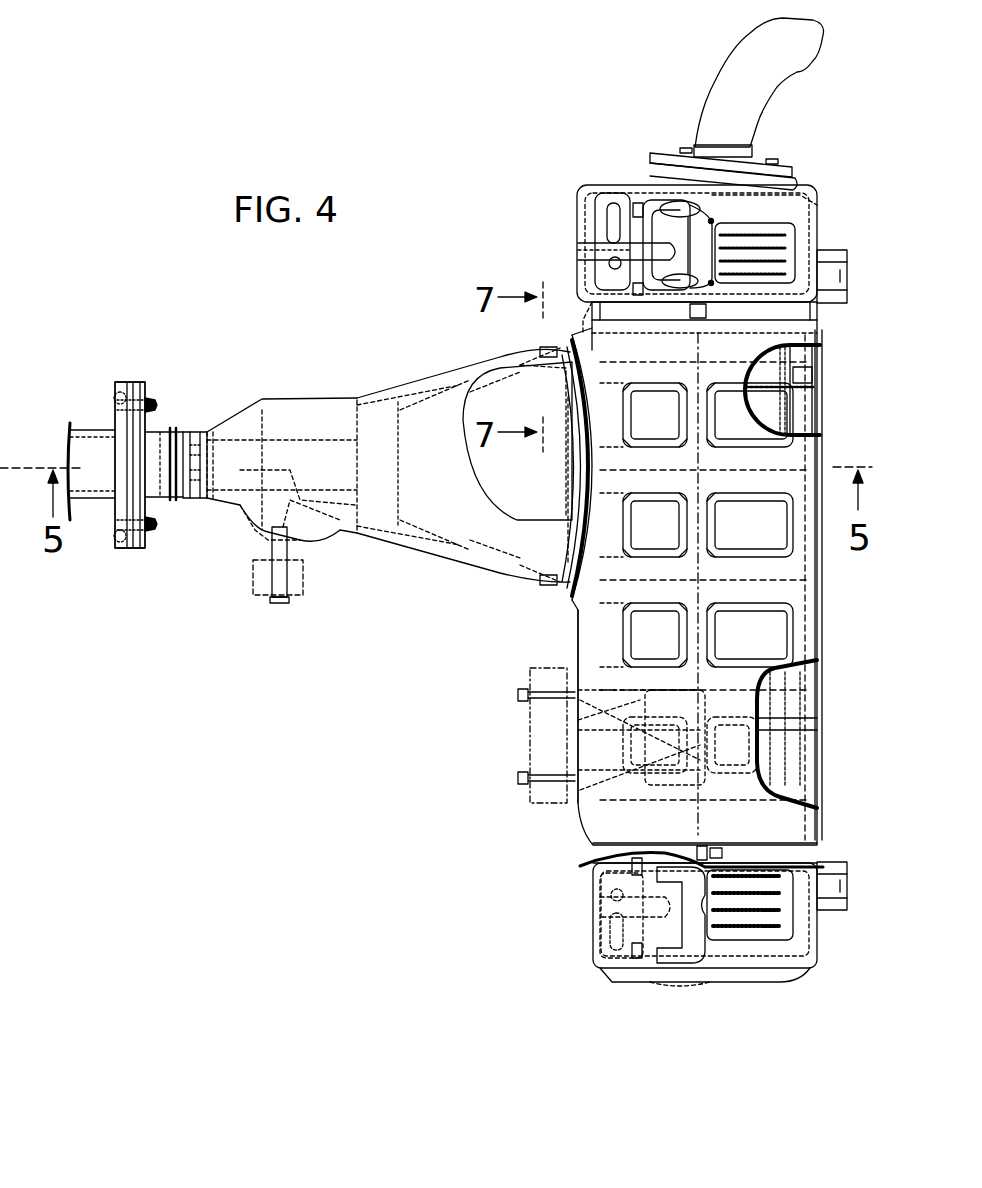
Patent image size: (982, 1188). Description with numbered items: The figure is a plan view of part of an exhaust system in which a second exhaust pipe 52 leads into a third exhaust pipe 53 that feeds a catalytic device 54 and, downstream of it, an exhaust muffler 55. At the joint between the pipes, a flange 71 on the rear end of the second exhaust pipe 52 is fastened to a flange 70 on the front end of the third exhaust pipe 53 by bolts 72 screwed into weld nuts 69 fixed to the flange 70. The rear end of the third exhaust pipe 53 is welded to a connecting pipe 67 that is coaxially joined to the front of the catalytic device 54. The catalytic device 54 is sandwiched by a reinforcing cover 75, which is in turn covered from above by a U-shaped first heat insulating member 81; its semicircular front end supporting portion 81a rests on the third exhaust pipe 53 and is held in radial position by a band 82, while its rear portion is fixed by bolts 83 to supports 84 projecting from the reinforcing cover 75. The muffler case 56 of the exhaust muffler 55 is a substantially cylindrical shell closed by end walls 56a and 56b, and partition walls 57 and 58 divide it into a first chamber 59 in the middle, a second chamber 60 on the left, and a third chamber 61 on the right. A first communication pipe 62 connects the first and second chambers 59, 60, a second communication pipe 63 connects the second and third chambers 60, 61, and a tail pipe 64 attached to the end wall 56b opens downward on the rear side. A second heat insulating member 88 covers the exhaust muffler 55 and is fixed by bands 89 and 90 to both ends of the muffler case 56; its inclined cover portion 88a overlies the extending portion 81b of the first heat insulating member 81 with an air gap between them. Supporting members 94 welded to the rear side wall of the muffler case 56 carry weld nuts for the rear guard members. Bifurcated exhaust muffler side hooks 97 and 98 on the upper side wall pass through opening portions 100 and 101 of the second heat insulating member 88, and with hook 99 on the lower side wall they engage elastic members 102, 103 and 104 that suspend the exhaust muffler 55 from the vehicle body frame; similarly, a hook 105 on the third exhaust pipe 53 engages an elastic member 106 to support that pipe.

The second exhaust pipe 52 is at (93, 437).
The third exhaust pipe 53 is at (297, 433).
The catalytic device 54 is at (367, 517).
The exhaust muffler 55 is at (590, 807).
The muffler case 56 is at (807, 413).
The end wall 56a is at (640, 975).
The end wall 56b is at (798, 187).
The partition wall 57 is at (763, 683).
The partition wall 58 is at (773, 397).
The first chamber 59 is at (803, 660).
The second chamber 60 is at (772, 785).
The third chamber 61 is at (765, 375).
The first communication pipe 62 is at (670, 687).
The second communication pipe 63 is at (717, 826).
The tail pipe 64 is at (720, 87).
The connecting pipe 67 is at (358, 420).
The weld nuts 69 is at (150, 400).
The flange 70 is at (138, 550).
The flange 71 is at (122, 550).
The bolts 72 is at (125, 383).
The reinforcing cover 75 is at (447, 403).
The first heat insulating member 81 is at (437, 550).
The front end supporting portion 81a is at (202, 500).
The extending portion 81b is at (630, 470).
The band 82 is at (193, 430).
The bolts 83 is at (542, 352).
The supports 84 is at (487, 395).
The second heat insulating member 88 is at (578, 635).
The cover portion 88a is at (584, 457).
The band 89 is at (585, 862).
The band 90 is at (590, 303).
The supporting members 94 is at (827, 260).
The exhaust muffler side hook 97 is at (660, 963).
The exhaust muffler side hook 98 is at (665, 207).
The exhaust muffler side hook 99 is at (518, 778).
The opening portion 100 is at (715, 957).
The opening portion 101 is at (697, 203).
The elastic member 102 is at (603, 900).
The elastic member 103 is at (605, 220).
The elastic member 104 is at (530, 740).
The hook 105 is at (279, 605).
The elastic member 106 is at (253, 577).